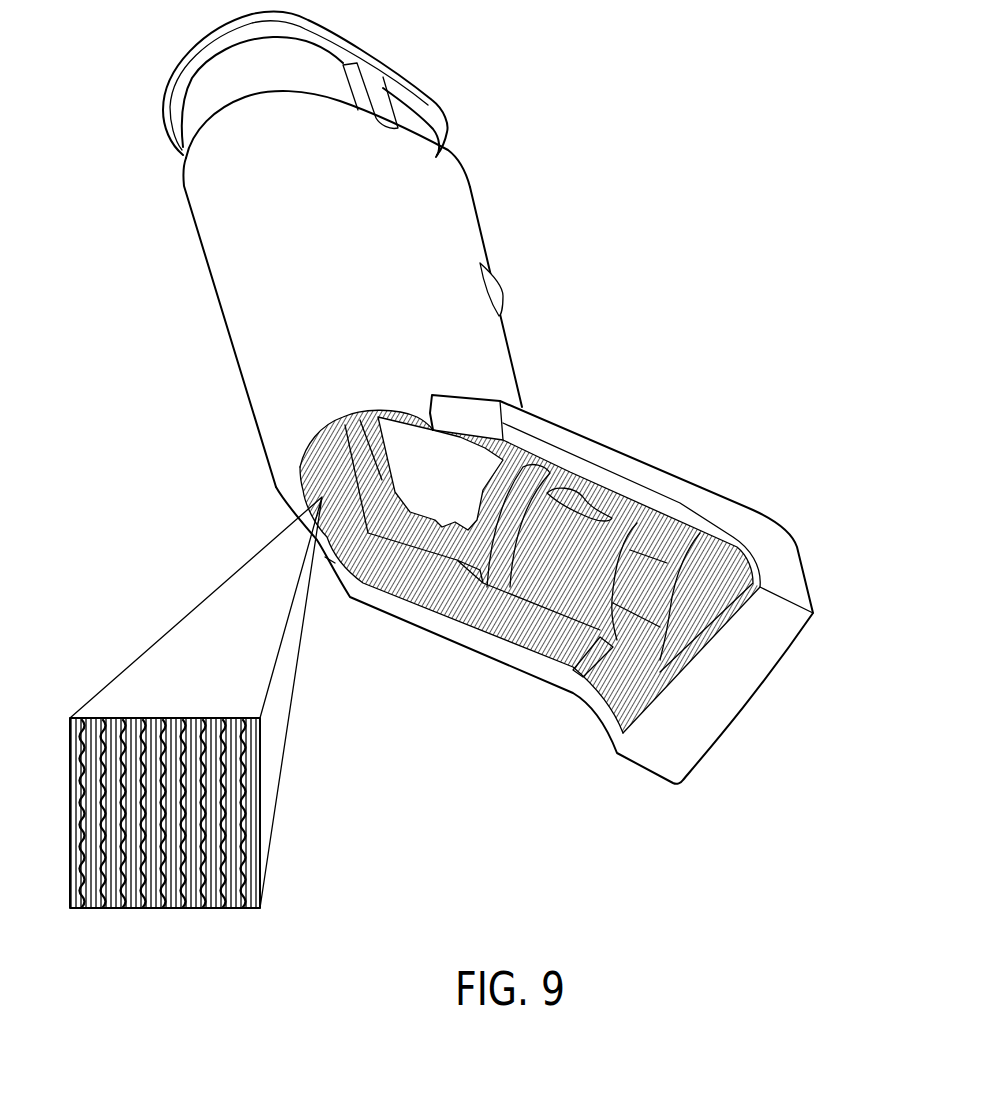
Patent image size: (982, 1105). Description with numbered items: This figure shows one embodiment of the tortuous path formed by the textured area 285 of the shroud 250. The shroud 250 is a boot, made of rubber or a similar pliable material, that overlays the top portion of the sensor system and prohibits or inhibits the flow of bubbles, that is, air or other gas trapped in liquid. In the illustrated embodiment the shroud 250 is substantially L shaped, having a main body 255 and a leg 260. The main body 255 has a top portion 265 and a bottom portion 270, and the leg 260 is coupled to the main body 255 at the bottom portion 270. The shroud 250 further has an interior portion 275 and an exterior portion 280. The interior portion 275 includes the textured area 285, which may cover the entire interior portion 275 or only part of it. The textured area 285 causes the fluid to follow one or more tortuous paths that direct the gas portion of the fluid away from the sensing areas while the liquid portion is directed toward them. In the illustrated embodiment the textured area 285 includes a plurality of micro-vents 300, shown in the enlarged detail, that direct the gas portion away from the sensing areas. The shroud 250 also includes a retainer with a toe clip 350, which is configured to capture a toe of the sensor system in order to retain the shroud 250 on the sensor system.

The shroud 250 is at (506, 121).
The top portion 265 is at (136, 163).
The main body 255 is at (205, 264).
The exterior portion 280 is at (268, 337).
The bottom portion 270 is at (251, 501).
The interior portion 275 is at (666, 522).
The leg 260 is at (768, 527).
The toe clip 350 is at (799, 653).
The textured area 285 is at (283, 797).
The micro-vents 300 is at (193, 918).